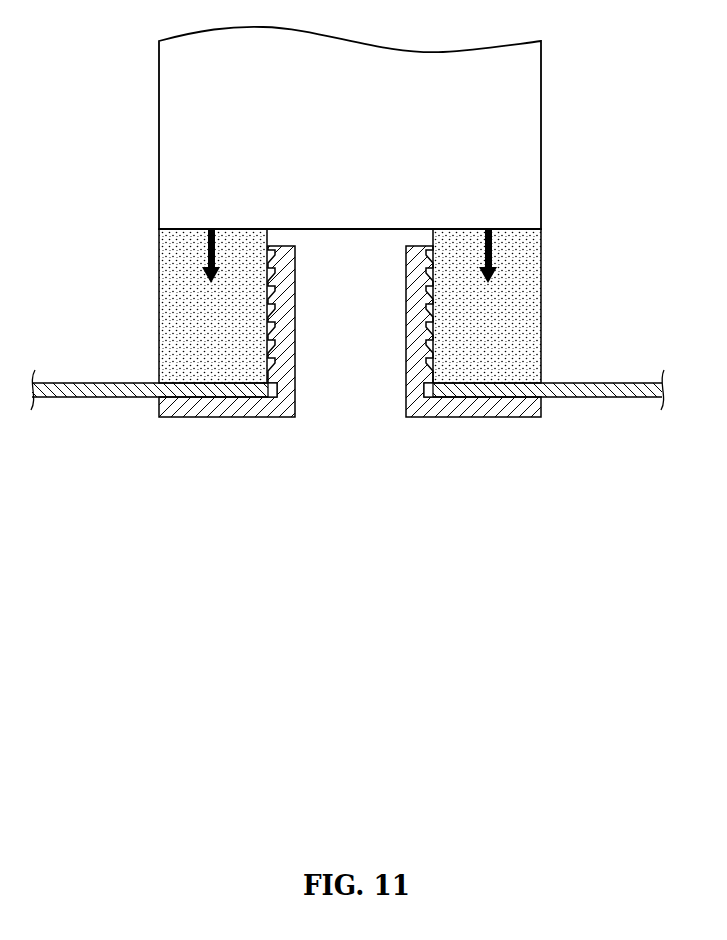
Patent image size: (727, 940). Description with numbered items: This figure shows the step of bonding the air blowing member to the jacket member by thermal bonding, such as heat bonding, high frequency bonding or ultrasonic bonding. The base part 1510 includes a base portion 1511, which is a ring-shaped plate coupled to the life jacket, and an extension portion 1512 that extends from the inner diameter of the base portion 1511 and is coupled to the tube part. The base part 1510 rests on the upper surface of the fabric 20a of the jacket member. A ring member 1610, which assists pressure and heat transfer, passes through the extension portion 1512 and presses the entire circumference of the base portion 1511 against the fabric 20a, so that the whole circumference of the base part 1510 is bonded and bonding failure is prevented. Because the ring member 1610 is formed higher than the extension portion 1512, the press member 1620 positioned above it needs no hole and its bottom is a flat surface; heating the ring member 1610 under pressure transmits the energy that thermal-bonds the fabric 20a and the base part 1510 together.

The press member 1620 is at (530, 142).
The ring member 1610 is at (530, 302).
The base part 1510 is at (350, 385).
The base portion 1511 is at (473, 366).
The extension portion 1512 is at (296, 367).
The fabric 20a is at (607, 393).